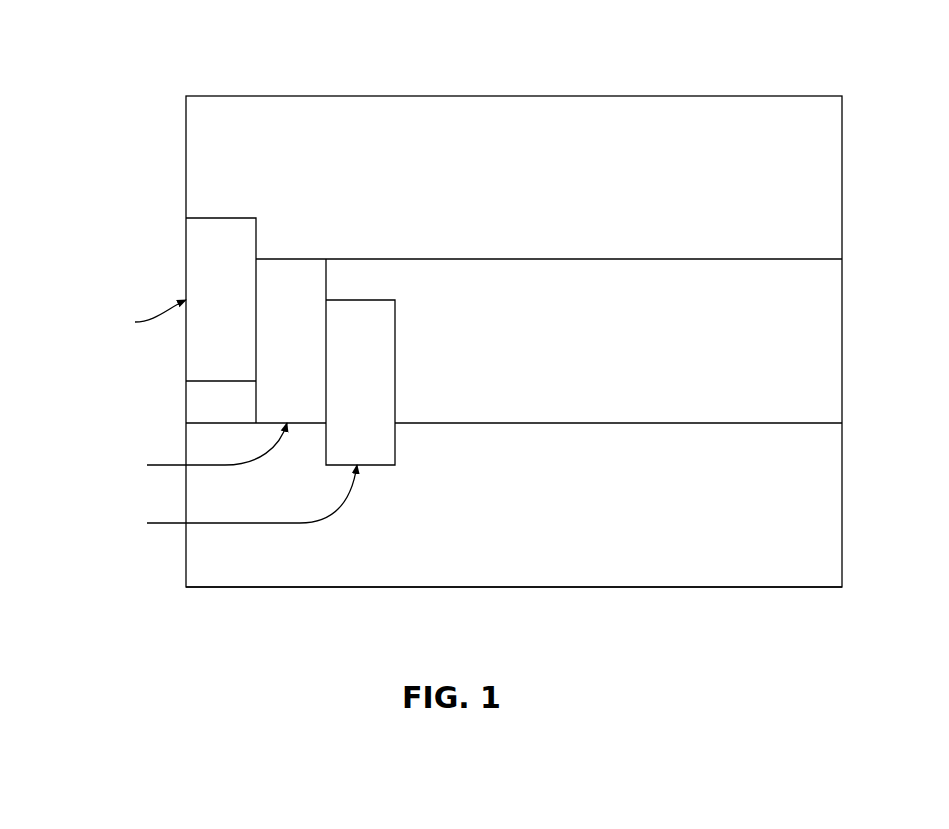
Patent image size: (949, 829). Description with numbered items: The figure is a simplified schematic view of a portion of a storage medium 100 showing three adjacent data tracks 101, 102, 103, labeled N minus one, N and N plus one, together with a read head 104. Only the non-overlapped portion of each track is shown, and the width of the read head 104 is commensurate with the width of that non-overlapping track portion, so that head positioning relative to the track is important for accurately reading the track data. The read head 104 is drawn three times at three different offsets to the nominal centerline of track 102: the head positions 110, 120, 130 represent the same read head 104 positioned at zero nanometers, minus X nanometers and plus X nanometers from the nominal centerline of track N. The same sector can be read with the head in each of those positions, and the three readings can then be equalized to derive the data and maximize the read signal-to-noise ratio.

The storage medium 100 is at (140, 52).
The data track 101 is at (825, 192).
The data track 102 is at (825, 335).
The data track 103 is at (825, 478).
The read head 104 is at (220, 231).
The head position 110 is at (113, 445).
The head position 120 is at (107, 545).
The head position 130 is at (82, 300).